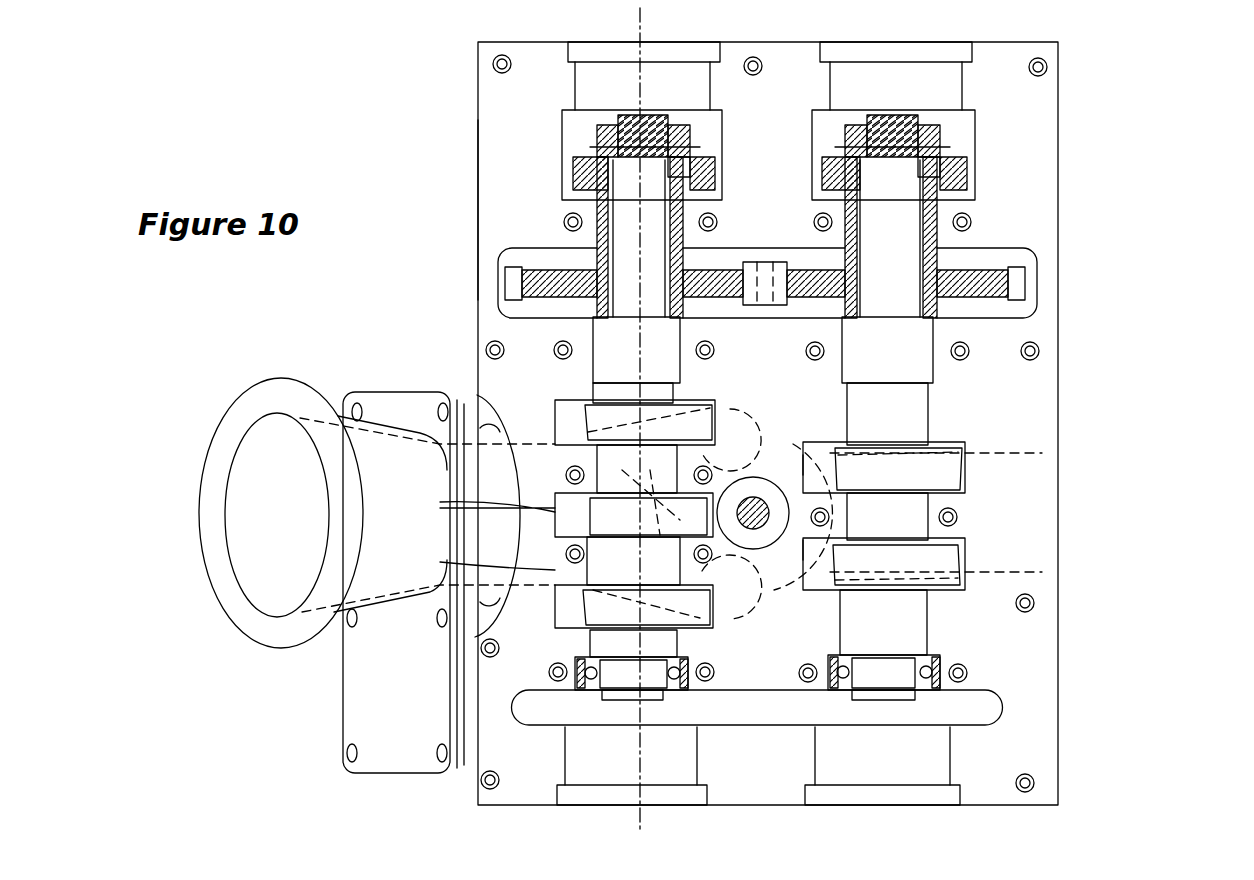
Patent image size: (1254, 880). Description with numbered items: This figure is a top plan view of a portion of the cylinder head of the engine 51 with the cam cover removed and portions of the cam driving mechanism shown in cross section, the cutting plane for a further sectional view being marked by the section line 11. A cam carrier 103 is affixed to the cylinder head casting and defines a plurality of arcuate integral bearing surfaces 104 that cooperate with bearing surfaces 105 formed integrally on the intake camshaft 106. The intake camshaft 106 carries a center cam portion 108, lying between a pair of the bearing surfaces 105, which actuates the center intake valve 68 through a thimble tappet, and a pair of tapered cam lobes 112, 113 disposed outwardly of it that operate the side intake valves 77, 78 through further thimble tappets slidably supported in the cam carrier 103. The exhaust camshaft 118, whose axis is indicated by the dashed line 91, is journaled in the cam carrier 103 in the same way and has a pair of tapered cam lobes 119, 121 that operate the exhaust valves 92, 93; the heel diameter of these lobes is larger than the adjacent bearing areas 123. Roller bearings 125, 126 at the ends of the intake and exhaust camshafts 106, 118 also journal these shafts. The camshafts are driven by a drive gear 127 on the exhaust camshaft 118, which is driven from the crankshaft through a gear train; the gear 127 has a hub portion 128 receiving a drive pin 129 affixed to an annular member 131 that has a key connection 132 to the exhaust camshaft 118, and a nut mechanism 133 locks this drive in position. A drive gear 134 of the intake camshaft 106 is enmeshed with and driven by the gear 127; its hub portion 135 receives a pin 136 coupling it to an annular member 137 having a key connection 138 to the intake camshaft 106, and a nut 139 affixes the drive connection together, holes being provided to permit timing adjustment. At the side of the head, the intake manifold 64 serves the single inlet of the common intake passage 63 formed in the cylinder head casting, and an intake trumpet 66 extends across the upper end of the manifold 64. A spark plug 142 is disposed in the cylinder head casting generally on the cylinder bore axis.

The section line 11- 11 is at (626, 14).
The engine 51 is at (1100, 365).
The intake passage 63 is at (470, 358).
The intake manifold 64 is at (468, 400).
The intake trumpet 66 is at (232, 410).
The center intake valve 68 is at (650, 480).
The side intake valve 77 is at (732, 587).
The side intake valve 78 is at (732, 440).
The shaft axis 91 is at (1050, 450).
The exhaust valve 92 is at (817, 552).
The exhaust valve 93 is at (817, 473).
The cam carrier 103 is at (470, 230).
The arcuate integral bearing surfaces 104 is at (590, 345).
The bearing surfaces 105 is at (575, 365).
The intake camshaft 106 is at (645, 705).
The cam portion 108 is at (468, 500).
The tapered cam lobe 112 is at (583, 610).
The tapered cam lobe 113 is at (585, 425).
The exhaust camshaft 118 is at (887, 705).
The tapered cam lobe 119 is at (955, 575).
The tapered cam lobe 121 is at (955, 448).
The bearing areas 123 is at (925, 520).
The roller bearing 125 is at (690, 660).
The roller bearing 126 is at (940, 665).
The drive gear 127 is at (945, 245).
The hub portion 128 is at (950, 190).
The drive pin 129 is at (965, 162).
The annular member 131 is at (945, 150).
The key connection 132 is at (905, 170).
The nut mechanism 133 is at (940, 135).
The drive gear 134 is at (707, 268).
The hub portion 135 is at (690, 195).
The pin 136 is at (712, 172).
The annular member 137 is at (700, 150).
The key connection 138 is at (690, 145).
The nut 139 is at (672, 135).
The spark plug 142 is at (760, 500).